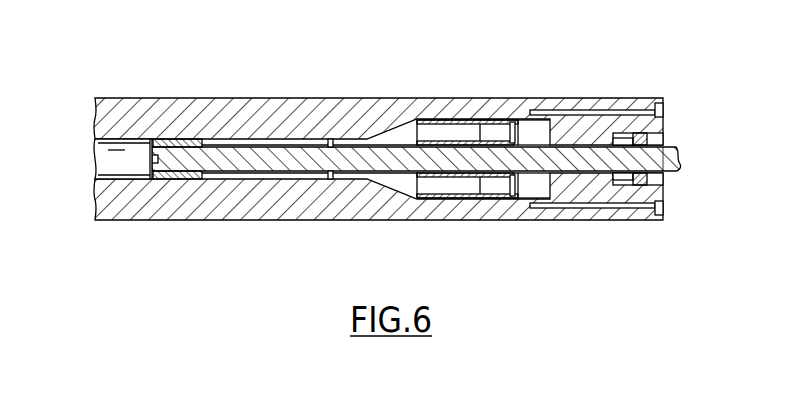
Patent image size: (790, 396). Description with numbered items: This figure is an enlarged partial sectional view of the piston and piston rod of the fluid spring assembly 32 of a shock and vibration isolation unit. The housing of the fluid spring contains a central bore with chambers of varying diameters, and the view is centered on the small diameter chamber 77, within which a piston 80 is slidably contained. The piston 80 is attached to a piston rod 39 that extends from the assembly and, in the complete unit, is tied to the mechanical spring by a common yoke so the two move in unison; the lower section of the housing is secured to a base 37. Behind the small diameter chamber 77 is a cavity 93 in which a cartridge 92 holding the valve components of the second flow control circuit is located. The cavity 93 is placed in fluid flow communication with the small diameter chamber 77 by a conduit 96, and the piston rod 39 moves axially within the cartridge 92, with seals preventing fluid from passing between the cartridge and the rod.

The fluid spring assembly 32 is at (371, 88).
The base 37 is at (165, 200).
The piston rod 39 is at (677, 152).
The small diameter chamber 77 is at (103, 160).
The piston 80 is at (191, 140).
The cartridge 92 is at (472, 120).
The cavity 93 is at (404, 186).
The conduit 96 is at (260, 179).